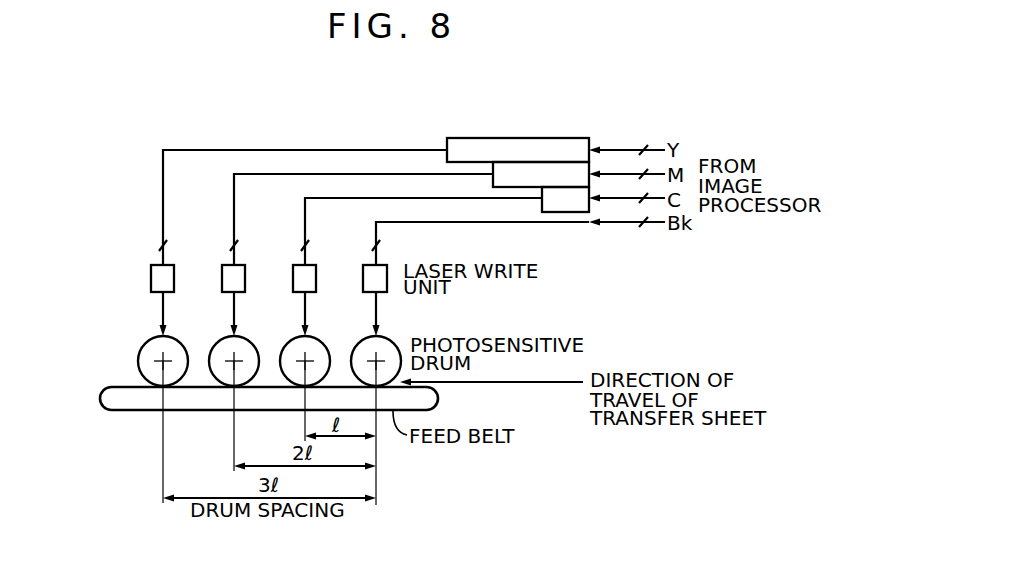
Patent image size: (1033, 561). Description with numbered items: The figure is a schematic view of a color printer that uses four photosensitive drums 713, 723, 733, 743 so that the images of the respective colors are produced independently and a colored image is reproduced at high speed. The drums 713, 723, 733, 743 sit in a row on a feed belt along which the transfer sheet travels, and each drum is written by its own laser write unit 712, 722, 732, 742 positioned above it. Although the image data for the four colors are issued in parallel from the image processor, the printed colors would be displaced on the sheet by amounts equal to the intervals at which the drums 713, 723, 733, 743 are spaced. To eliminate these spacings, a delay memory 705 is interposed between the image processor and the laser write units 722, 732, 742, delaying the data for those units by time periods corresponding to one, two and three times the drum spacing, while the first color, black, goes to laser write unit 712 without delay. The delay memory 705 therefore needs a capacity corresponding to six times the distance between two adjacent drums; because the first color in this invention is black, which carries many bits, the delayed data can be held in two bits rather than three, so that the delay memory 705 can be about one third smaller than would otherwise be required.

The delay memory 705 is at (458, 147).
The laser write unit 742 is at (161, 276).
The laser write unit 732 is at (232, 276).
The laser write unit 722 is at (303, 276).
The laser write unit 712 is at (374, 276).
The photosensitive drum 743 is at (151, 347).
The photosensitive drum 733 is at (222, 347).
The photosensitive drum 723 is at (293, 347).
The photosensitive drum 713 is at (364, 347).